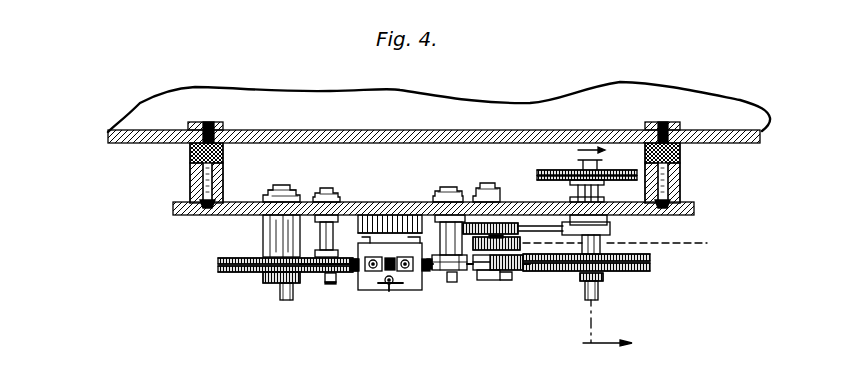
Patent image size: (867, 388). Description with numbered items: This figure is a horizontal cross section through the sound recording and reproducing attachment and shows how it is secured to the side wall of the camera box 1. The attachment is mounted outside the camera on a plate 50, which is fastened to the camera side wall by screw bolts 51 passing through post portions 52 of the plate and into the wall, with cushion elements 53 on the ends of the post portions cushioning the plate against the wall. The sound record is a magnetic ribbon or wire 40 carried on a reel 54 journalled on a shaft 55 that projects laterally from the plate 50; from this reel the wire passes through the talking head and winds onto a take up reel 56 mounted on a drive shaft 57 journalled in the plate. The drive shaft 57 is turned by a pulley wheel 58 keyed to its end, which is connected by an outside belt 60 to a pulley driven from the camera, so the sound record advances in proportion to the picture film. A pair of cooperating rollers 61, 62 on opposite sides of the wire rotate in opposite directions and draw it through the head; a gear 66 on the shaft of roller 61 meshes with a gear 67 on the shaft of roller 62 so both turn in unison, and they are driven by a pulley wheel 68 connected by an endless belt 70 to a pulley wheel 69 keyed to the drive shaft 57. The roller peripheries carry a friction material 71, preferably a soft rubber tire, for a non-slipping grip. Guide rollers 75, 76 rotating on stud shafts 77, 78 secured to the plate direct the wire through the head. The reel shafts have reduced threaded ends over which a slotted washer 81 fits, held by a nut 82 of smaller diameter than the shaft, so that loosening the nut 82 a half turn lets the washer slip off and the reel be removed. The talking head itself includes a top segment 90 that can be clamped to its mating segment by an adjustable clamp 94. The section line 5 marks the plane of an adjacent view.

The camera box 1 is at (424, 131).
The section line 5- 5 is at (613, 247).
The magnetic ribbon or wire 40 is at (257, 276).
The plate 50 is at (367, 203).
The screw bolts 51 is at (190, 204).
The post portions 52 is at (197, 188).
The cushion elements 53 is at (224, 160).
The reel 54 is at (248, 273).
The shaft 55 is at (262, 240).
The take up reel 56 is at (645, 272).
The drive shaft 57 is at (630, 247).
The pulley wheel 58 is at (555, 170).
The outside belt 60 is at (540, 170).
The roller 61 is at (478, 281).
The roller 62 is at (515, 271).
The gear 66 is at (430, 202).
The gear 67 is at (521, 243).
The pulley wheel 68 is at (501, 223).
The pulley wheel 69 is at (612, 228).
The endless belt 70 is at (547, 228).
The friction material 71 is at (508, 281).
The guide roller 75 is at (340, 285).
The guide roller 76 is at (452, 283).
The stud shaft 77 is at (330, 278).
The stud shaft 78 is at (447, 282).
The slotted washer 81 is at (273, 284).
The nut 82 is at (286, 302).
The top segment 90 is at (412, 291).
The adjustable clamp 94 is at (388, 292).